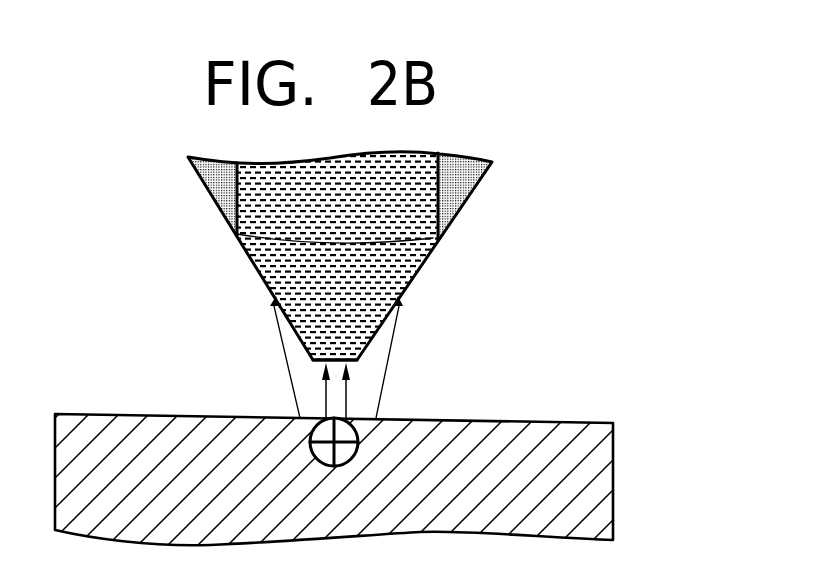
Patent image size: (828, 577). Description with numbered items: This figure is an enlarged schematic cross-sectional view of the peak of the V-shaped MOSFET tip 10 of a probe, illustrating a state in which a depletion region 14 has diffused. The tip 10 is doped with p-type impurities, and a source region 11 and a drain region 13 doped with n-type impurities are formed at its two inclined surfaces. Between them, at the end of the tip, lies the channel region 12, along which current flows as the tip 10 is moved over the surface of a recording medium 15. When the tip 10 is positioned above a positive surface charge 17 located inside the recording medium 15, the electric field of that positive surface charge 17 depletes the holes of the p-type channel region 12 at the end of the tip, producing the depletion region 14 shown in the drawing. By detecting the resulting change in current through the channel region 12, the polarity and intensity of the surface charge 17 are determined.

The MOSFET tip 10 is at (197, 262).
The source region 11 is at (205, 183).
The channel region 12 is at (310, 350).
The drain region 13 is at (474, 188).
The depletion region 14 is at (287, 272).
The recording medium 15 is at (602, 470).
The surface charge 17 is at (355, 418).